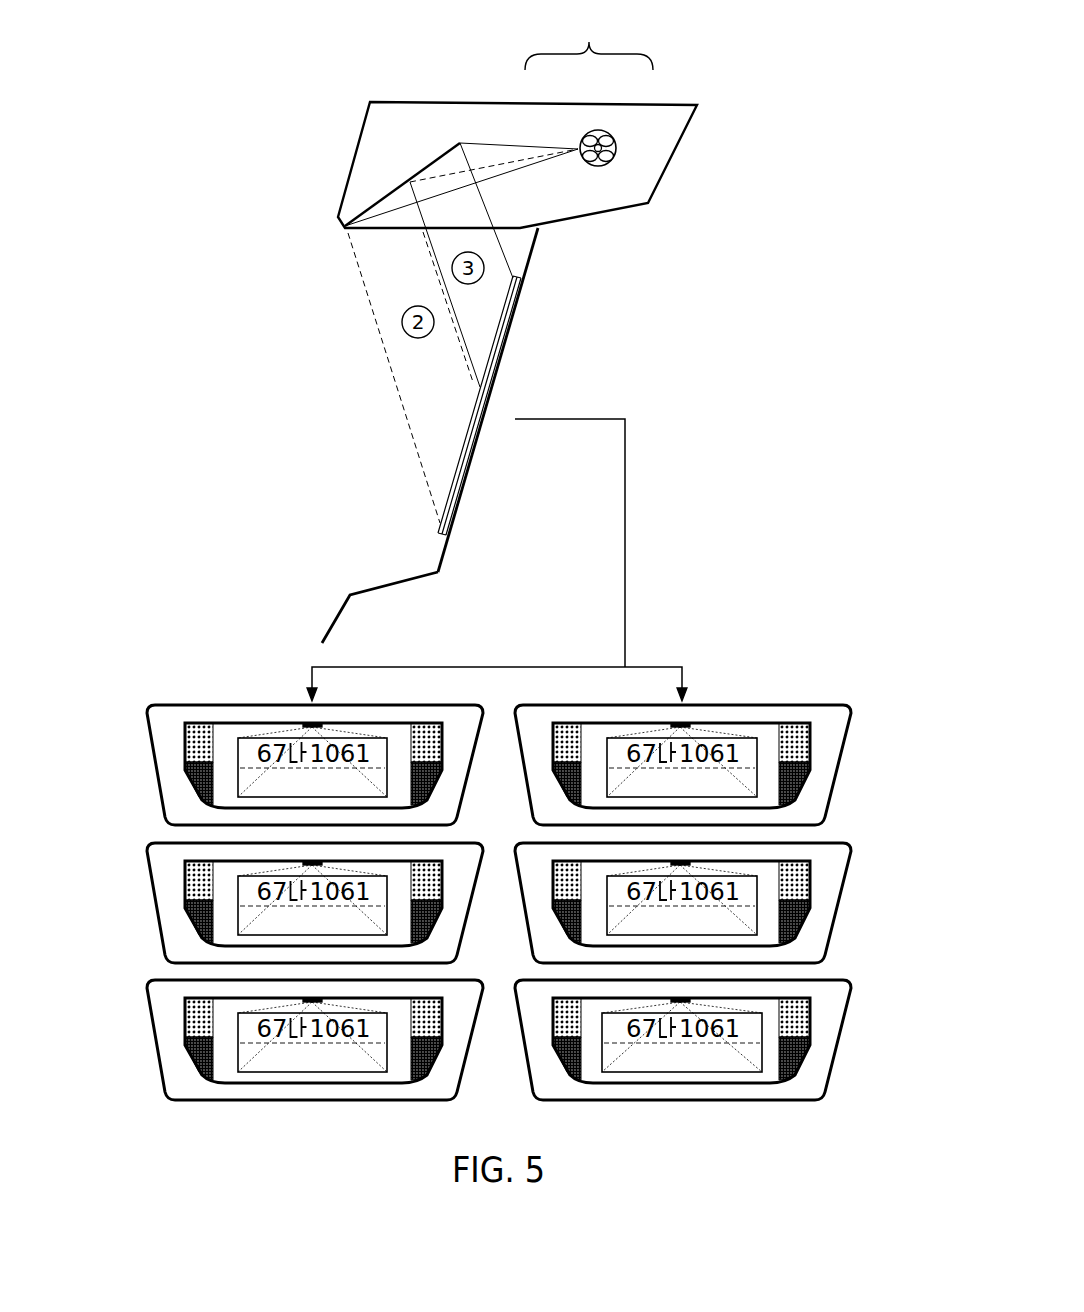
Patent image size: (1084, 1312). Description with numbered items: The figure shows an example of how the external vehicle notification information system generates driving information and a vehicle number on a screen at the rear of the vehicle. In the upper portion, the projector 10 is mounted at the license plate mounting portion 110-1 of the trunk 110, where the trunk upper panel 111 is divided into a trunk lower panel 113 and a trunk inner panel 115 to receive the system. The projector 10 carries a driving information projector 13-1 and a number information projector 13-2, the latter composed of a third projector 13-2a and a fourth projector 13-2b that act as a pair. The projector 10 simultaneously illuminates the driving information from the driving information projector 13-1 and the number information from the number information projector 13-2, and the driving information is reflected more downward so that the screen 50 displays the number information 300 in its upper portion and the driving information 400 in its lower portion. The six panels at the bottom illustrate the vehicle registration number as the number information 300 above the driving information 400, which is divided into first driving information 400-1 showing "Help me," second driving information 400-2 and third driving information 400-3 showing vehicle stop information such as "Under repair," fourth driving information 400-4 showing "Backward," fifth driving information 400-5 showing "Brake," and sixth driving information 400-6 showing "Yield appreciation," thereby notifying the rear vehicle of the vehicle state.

The projector 10 is at (616, 156).
The driving information projector 13-1 is at (629, 115).
The number information projector 13-2 is at (589, 36).
The third projector 13-2a is at (586, 133).
The fourth projector 13-2b is at (609, 133).
The screen 50 is at (504, 356).
The trunk 110 is at (296, 430).
The license plate mounting portion 110-1 is at (448, 548).
The trunk upper panel 111 is at (352, 163).
The trunk lower panel 113 is at (392, 582).
The trunk inner panel 115 is at (592, 217).
The number information 300 is at (386, 752).
The driving information 400 is at (787, 605).
The first driving information 400-1 is at (238, 782).
The second driving information 400-2 is at (237, 918).
The third driving information 400-3 is at (237, 1057).
The fourth driving information 400-4 is at (760, 780).
The fifth driving information 400-5 is at (760, 918).
The sixth driving information 400-6 is at (762, 1057).